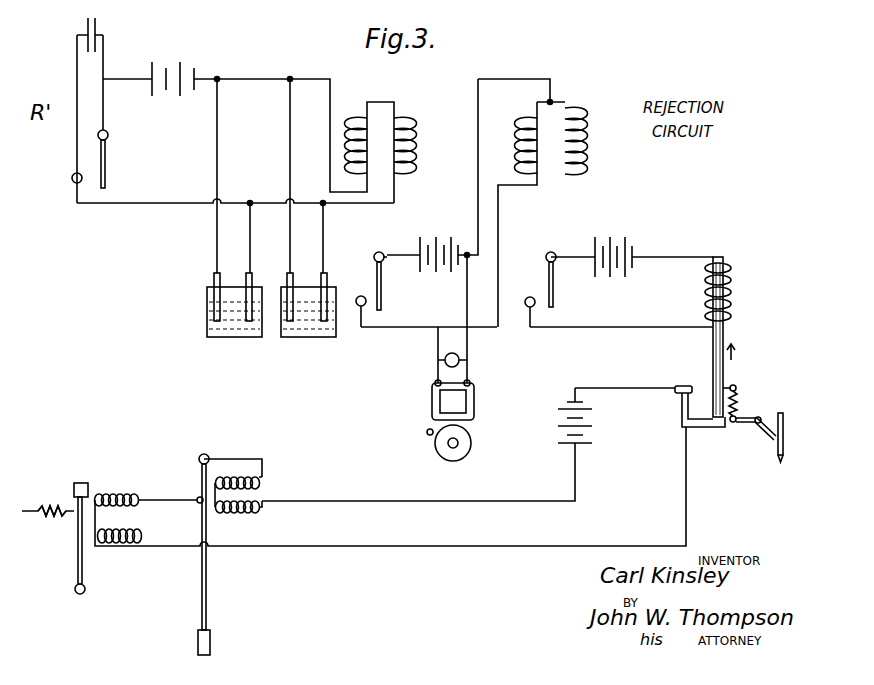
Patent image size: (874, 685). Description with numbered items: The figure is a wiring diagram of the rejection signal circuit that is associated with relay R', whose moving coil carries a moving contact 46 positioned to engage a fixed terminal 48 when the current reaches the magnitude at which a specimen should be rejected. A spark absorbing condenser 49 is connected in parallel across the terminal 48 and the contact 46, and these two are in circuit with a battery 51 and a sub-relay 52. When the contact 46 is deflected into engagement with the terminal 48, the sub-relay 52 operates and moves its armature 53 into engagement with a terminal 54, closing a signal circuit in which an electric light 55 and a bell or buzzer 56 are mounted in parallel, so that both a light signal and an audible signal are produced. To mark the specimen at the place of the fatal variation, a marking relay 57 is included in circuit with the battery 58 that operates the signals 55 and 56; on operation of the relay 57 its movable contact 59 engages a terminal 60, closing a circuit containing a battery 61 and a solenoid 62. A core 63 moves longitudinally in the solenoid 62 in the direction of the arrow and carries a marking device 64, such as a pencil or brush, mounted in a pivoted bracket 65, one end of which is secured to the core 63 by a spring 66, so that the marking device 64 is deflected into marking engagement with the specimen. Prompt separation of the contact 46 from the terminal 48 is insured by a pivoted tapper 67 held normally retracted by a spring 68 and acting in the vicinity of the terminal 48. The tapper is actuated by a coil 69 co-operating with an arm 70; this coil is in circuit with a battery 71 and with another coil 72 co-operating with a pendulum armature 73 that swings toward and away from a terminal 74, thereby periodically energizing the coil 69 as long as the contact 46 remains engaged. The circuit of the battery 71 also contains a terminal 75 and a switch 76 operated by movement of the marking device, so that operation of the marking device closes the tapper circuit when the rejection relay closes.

The moving contact 46 is at (107, 152).
The fixed terminal 48 is at (72, 175).
The spark absorbing condenser 49 is at (86, 25).
The battery 51 is at (195, 68).
The sub-relay 52 is at (405, 116).
The armature 53 is at (383, 286).
The terminal 54 is at (356, 306).
The electric light 55 is at (460, 356).
The bell or buzzer 56 is at (470, 432).
The marking relay 57 is at (598, 95).
The battery 58 is at (444, 235).
The movable contact 59 is at (557, 291).
The terminal 60 is at (530, 297).
The battery 61 is at (641, 226).
The solenoid 62 is at (707, 297).
The core 63 is at (722, 337).
The marking device 64 is at (784, 455).
The pivoted bracket 65 is at (758, 428).
The spring 66 is at (738, 407).
The pivoted tapper 67 is at (100, 462).
The spring 68 is at (53, 520).
The coil 69 is at (127, 494).
The arm 70 is at (85, 563).
The battery 71 is at (585, 440).
The coil 72 is at (263, 508).
The pendulum armature 73 is at (208, 584).
The terminal 74 is at (197, 503).
The terminal 75 is at (683, 386).
The switch 76 is at (682, 400).